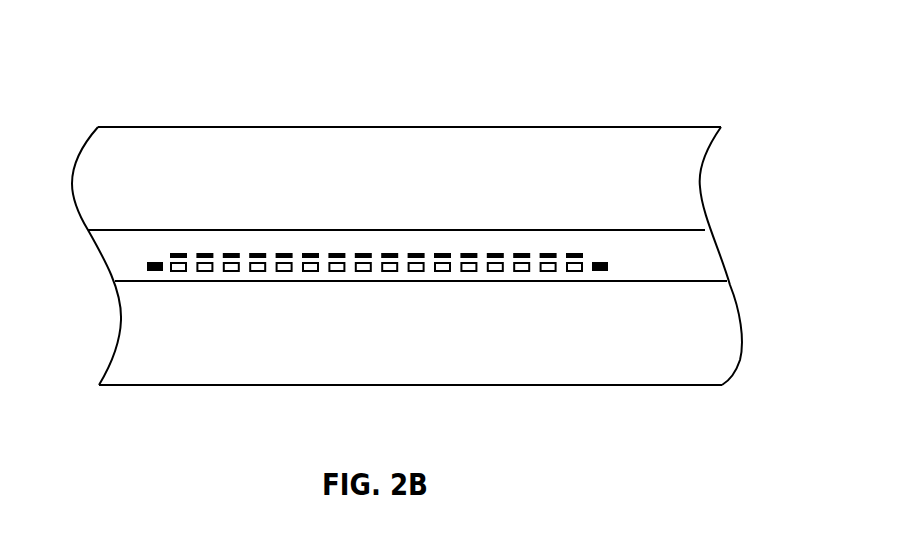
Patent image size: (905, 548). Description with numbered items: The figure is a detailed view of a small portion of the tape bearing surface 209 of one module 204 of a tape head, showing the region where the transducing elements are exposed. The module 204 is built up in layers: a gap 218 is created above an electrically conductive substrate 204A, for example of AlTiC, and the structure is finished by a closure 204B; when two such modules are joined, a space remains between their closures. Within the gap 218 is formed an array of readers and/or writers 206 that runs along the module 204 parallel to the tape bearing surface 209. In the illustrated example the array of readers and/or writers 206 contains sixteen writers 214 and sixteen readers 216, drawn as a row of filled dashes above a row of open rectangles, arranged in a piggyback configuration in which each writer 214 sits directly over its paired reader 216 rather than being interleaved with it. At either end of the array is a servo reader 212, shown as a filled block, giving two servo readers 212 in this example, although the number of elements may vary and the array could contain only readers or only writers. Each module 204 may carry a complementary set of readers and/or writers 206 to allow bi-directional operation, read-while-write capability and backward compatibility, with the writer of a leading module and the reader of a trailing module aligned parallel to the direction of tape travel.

The module 204 is at (113, 100).
The electrically conductive substrate 204A is at (205, 127).
The closure 204B is at (257, 385).
The tape bearing surface 209 is at (335, 197).
The readers and/or writers 206 is at (636, 250).
The writers 214 is at (495, 253).
The readers 216 is at (495, 272).
The servo readers 212 is at (147, 266).
The gap 218 is at (723, 255).